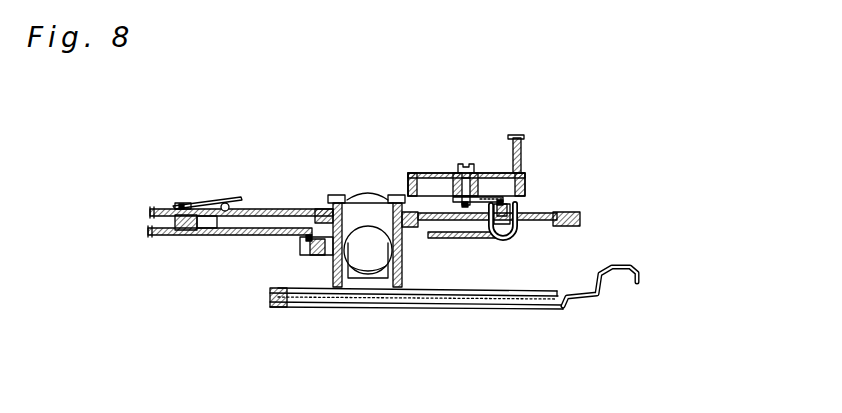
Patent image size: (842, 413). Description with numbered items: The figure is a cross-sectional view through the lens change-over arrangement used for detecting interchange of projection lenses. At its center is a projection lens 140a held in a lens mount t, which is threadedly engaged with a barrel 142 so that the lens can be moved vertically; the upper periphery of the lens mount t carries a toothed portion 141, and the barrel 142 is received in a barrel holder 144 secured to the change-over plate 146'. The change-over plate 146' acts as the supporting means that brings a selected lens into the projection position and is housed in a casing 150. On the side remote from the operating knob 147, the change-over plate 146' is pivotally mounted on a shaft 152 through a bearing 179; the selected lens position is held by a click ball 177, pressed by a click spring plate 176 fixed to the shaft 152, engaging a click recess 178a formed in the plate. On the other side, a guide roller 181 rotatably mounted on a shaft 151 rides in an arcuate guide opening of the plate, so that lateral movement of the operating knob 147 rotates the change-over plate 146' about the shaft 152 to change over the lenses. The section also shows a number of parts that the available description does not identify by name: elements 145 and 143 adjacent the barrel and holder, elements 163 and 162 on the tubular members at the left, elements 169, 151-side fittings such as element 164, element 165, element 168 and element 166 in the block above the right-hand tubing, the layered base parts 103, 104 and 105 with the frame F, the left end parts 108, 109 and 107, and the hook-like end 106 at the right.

The toothed portion 141 is at (330, 195).
The projection lens 140a is at (364, 193).
The lens mount t is at (328, 195).
The barrel holder 144 is at (398, 264).
The ball retainer cup 145 is at (356, 274).
The valve housing wall 143 is at (328, 289).
The barrel 142 is at (397, 300).
The bearing 179 is at (150, 211).
The shaft 152 is at (178, 233).
The click spring plate 176 is at (208, 203).
The click ball 177 is at (241, 203).
The click recess 178a is at (222, 214).
The seal ring 163 is at (318, 216).
The coupling block 162 is at (303, 253).
The change-over plate 146' is at (479, 249).
The operating knob 147 is at (572, 212).
The casing 150 is at (522, 238).
The U-shaped connector 169 is at (484, 236).
The shaft 151 is at (508, 243).
The upper block 164 is at (437, 173).
The block end wall 165 is at (408, 173).
The screw 168 is at (461, 173).
The mounting bar 166 is at (494, 200).
The guide roller 181 is at (522, 199).
The base plate top layer 103 is at (473, 309).
The base plate middle layer 104 is at (517, 309).
The base plate bottom layer 105 is at (548, 309).
The frame F is at (452, 305).
The spring 108 is at (270, 294).
The plate end 109 is at (277, 303).
The plate edge 107 is at (278, 306).
The hook 106 is at (603, 302).